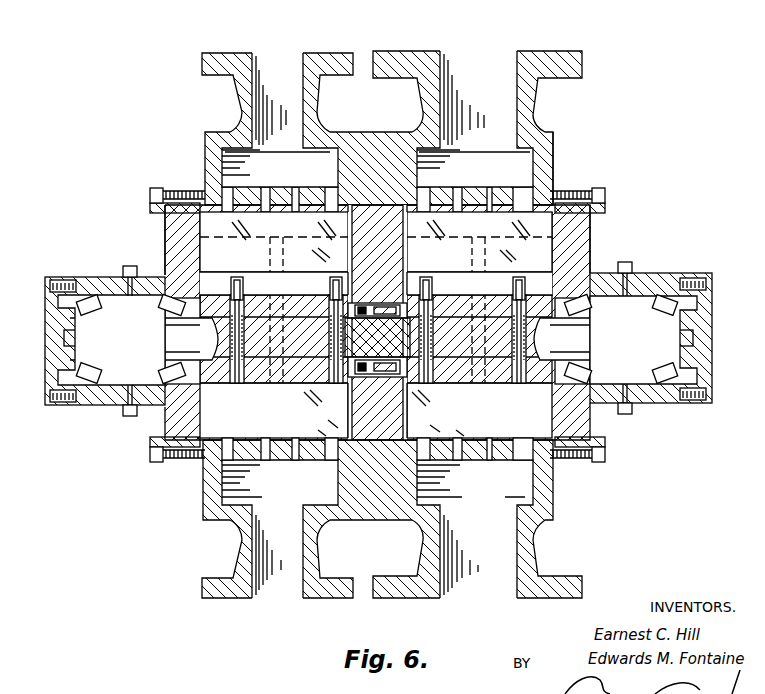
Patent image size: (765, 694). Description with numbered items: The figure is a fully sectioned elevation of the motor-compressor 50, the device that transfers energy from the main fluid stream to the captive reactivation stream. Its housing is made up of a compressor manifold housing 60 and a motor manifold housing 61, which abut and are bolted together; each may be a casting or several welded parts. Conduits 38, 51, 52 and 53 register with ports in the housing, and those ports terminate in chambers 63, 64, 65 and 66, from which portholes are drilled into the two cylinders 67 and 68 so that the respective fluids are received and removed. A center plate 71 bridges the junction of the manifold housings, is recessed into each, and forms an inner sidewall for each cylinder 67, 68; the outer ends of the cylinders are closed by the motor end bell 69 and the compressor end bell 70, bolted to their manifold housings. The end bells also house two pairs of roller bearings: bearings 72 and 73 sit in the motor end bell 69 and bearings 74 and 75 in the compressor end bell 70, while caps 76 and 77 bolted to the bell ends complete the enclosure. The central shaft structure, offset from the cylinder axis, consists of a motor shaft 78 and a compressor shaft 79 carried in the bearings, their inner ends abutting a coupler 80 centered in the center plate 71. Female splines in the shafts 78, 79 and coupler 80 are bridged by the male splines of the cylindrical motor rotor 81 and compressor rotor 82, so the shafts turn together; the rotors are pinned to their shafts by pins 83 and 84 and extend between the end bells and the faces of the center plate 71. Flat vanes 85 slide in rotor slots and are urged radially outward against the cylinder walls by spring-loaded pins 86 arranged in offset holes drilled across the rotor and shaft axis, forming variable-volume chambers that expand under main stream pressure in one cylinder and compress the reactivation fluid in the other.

The conduit 38 is at (269, 53).
The conduit 52 is at (475, 51).
The motor-compressor 50 is at (669, 161).
The conduit 51 is at (268, 600).
The conduit 53 is at (466, 600).
The compressor manifold housing 60 is at (207, 134).
The motor manifold housing 61 is at (553, 135).
The chamber 63 is at (311, 176).
The chamber 64 is at (508, 176).
The chamber 65 is at (309, 492).
The chamber 66 is at (507, 492).
The cylinder 67 is at (592, 216).
The cylinder 68 is at (163, 216).
The motor end bell 69 is at (590, 240).
The compressor end bell 70 is at (166, 240).
The center plate 71 is at (362, 406).
The bearing 72 is at (584, 300).
The bearing 73 is at (652, 298).
The bearing 74 is at (96, 292).
The bearing 75 is at (166, 292).
The cap 76 is at (712, 330).
The cap 77 is at (45, 335).
The motor shaft 78 is at (587, 346).
The compressor shaft 79 is at (195, 344).
The coupler 80 is at (401, 342).
The motor rotor 81 is at (540, 388).
The compressor rotor 82 is at (212, 400).
The pin 83 is at (270, 252).
The pin 84 is at (476, 252).
The vane 85 is at (331, 254).
The spring-loaded pin 86 is at (329, 290).